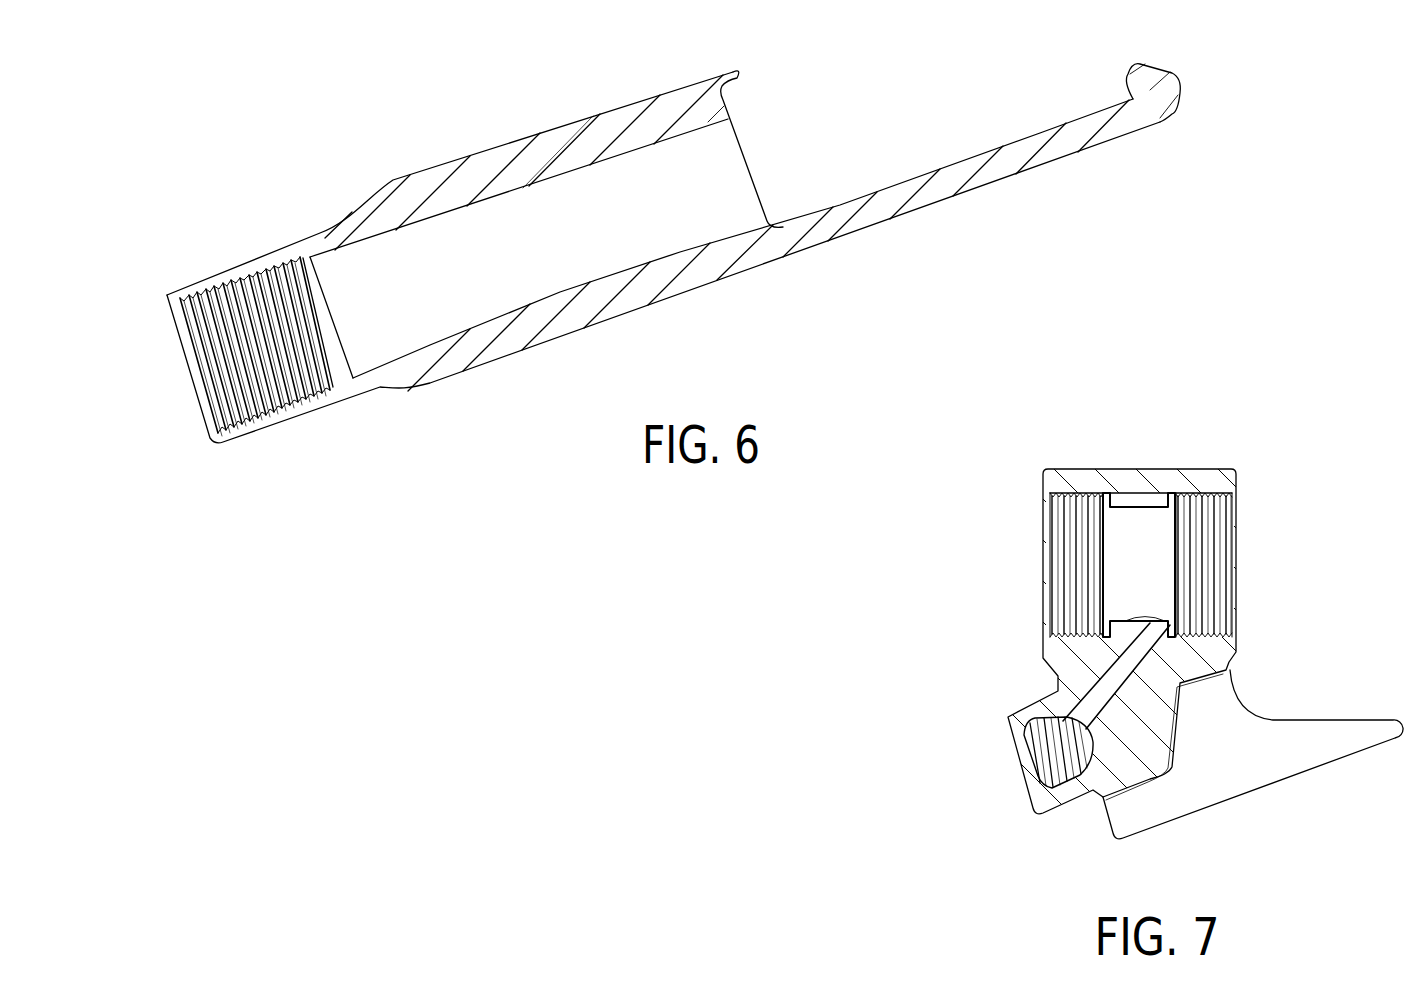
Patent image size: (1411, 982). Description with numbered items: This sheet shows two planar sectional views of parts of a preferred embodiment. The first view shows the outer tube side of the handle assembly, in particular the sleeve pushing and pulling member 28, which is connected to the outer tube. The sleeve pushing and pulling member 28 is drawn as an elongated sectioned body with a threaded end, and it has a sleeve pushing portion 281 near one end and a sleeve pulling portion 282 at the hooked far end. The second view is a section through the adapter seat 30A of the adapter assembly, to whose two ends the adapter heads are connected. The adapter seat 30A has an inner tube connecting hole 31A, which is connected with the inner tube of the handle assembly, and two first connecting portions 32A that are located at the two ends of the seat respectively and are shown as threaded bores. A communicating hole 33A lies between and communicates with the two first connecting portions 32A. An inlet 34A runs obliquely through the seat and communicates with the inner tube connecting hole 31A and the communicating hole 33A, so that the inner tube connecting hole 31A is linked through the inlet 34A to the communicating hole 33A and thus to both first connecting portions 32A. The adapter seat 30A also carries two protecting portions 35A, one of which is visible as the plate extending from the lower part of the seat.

In FIG. 6, the sleeve pushing and pulling member 28 is at (759, 246).
In FIG. 6, the sleeve pushing portion 281 is at (733, 73).
In FIG. 6, the sleeve pulling portion 282 is at (1158, 90).
In FIG. 7, the adapter seat 30A is at (1046, 599).
In FIG. 7, the inner tube connecting hole 31A is at (1045, 754).
In FIG. 7, the first connecting portions 32A is at (1083, 567).
In FIG. 7, the communicating hole 33A is at (1130, 535).
In FIG. 7, the inlet 34A is at (1098, 690).
In FIG. 7, the protecting portions 35A is at (1254, 753).